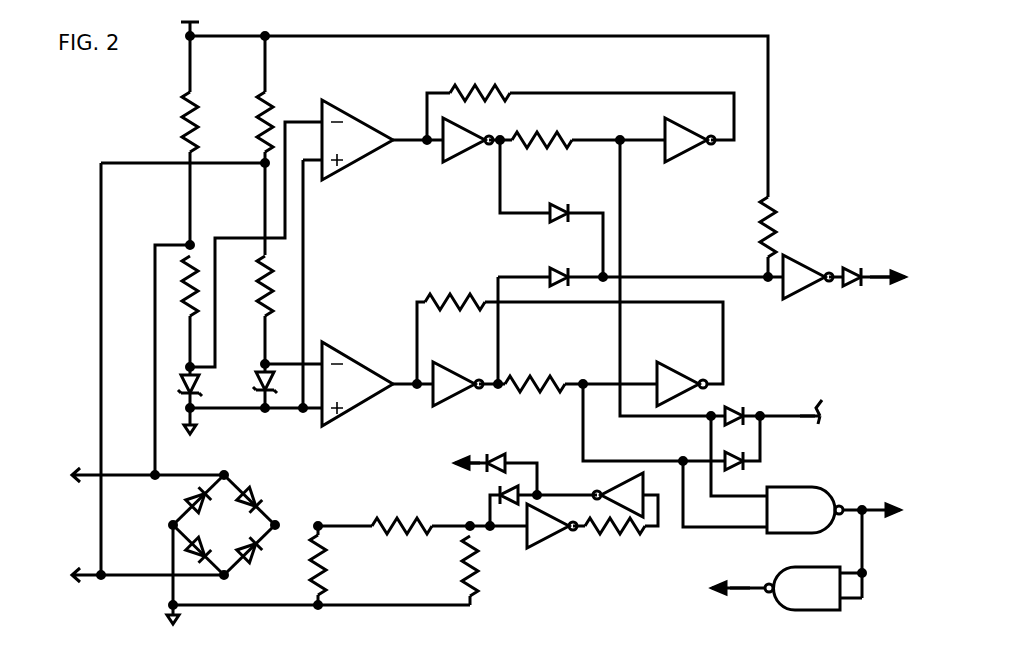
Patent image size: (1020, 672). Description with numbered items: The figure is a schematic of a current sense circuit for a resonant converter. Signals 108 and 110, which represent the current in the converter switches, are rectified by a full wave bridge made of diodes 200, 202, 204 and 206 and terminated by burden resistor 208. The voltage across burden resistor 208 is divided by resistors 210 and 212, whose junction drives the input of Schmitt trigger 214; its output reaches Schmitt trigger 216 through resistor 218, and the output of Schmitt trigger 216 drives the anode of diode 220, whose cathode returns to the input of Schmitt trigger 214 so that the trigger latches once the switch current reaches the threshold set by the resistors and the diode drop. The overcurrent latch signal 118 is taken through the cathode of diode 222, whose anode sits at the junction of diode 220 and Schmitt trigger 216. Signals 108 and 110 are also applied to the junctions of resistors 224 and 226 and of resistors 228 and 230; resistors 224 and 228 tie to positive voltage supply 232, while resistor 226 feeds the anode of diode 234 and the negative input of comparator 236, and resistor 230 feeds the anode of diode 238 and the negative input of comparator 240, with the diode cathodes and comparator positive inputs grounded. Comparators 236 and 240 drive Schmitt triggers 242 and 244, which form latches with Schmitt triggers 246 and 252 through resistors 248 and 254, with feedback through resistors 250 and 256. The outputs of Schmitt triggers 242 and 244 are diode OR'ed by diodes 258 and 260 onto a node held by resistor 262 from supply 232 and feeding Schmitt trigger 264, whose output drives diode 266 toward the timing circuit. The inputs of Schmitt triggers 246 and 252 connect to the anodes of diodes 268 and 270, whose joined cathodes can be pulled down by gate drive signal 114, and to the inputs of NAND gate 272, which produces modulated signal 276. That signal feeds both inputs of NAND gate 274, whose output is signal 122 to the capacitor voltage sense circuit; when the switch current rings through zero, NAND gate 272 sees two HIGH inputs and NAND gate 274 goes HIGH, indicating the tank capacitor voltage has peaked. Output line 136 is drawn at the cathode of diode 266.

The signal 108 is at (85, 480).
The signal 110 is at (85, 580).
The gate drive signal 114 is at (828, 400).
The overcurrent latch signal 118 is at (447, 465).
The signal 122 is at (724, 606).
The output line 136 is at (891, 294).
The diode 200 is at (205, 490).
The diode 202 is at (258, 500).
The diode 204 is at (184, 554).
The diode 206 is at (260, 550).
The burden resistor 208 is at (328, 575).
The resistor 210 is at (402, 494).
The resistor 212 is at (480, 560).
The Schmitt trigger 214 is at (560, 534).
The Schmitt trigger 216 is at (645, 478).
The resistor 218 is at (622, 535).
The diode 220 is at (498, 490).
The diode 222 is at (518, 436).
The resistor 224 is at (188, 126).
The resistor 226 is at (187, 285).
The resistor 228 is at (270, 125).
The resistor 230 is at (275, 285).
The positive voltage supply 232 is at (194, 18).
The diode 234 is at (200, 388).
The comparator 236 is at (360, 112).
The diode 238 is at (260, 380).
The comparator 240 is at (355, 358).
The Schmitt trigger 242 is at (475, 148).
The Schmitt trigger 244 is at (468, 392).
The Schmitt trigger 246 is at (695, 150).
The resistor 248 is at (546, 105).
The resistor 250 is at (470, 88).
The Schmitt trigger 252 is at (682, 378).
The resistor 254 is at (548, 374).
The resistor 256 is at (472, 270).
The diode 258 is at (560, 203).
The diode 260 is at (558, 268).
The resistor 262 is at (778, 212).
The Schmitt trigger 264 is at (810, 290).
The diode 266 is at (854, 274).
The diode 268 is at (742, 405).
The diode 270 is at (740, 470).
The NAND gate 272 is at (820, 485).
The NAND gate 274 is at (805, 612).
The modulated signal 276 is at (886, 554).